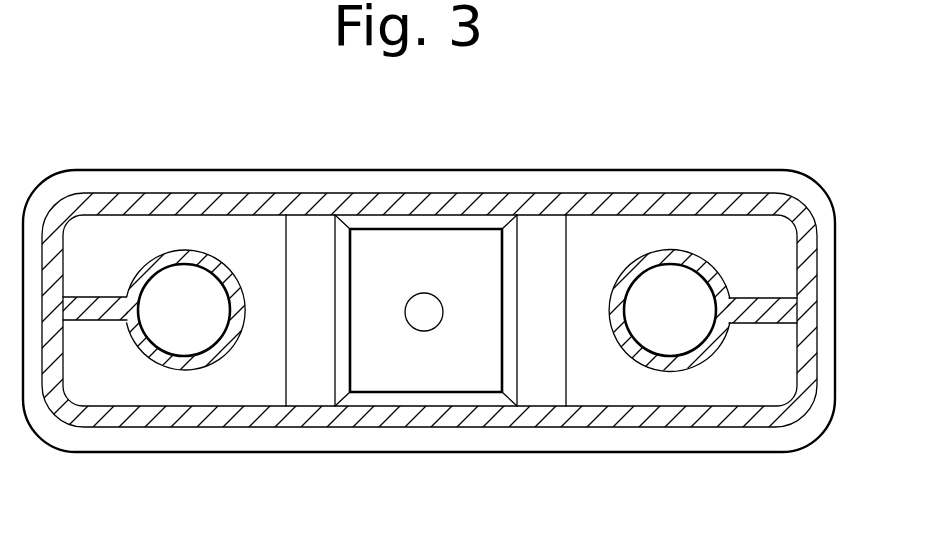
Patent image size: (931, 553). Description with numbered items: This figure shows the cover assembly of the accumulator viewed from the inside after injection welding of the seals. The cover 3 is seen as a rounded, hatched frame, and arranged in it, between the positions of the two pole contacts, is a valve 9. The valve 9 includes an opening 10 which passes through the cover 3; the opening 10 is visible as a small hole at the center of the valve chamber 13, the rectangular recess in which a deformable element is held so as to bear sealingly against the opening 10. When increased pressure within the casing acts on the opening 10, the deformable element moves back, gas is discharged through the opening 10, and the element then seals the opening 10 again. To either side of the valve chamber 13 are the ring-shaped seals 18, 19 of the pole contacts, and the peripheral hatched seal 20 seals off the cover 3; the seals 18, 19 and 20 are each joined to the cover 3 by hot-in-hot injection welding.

The cover 3 is at (630, 433).
The valve 9 is at (412, 358).
The opening 10 is at (432, 305).
The valve chamber 13 is at (374, 250).
The seal 18 is at (167, 260).
The seal 19 is at (642, 262).
The seal 20 is at (300, 417).